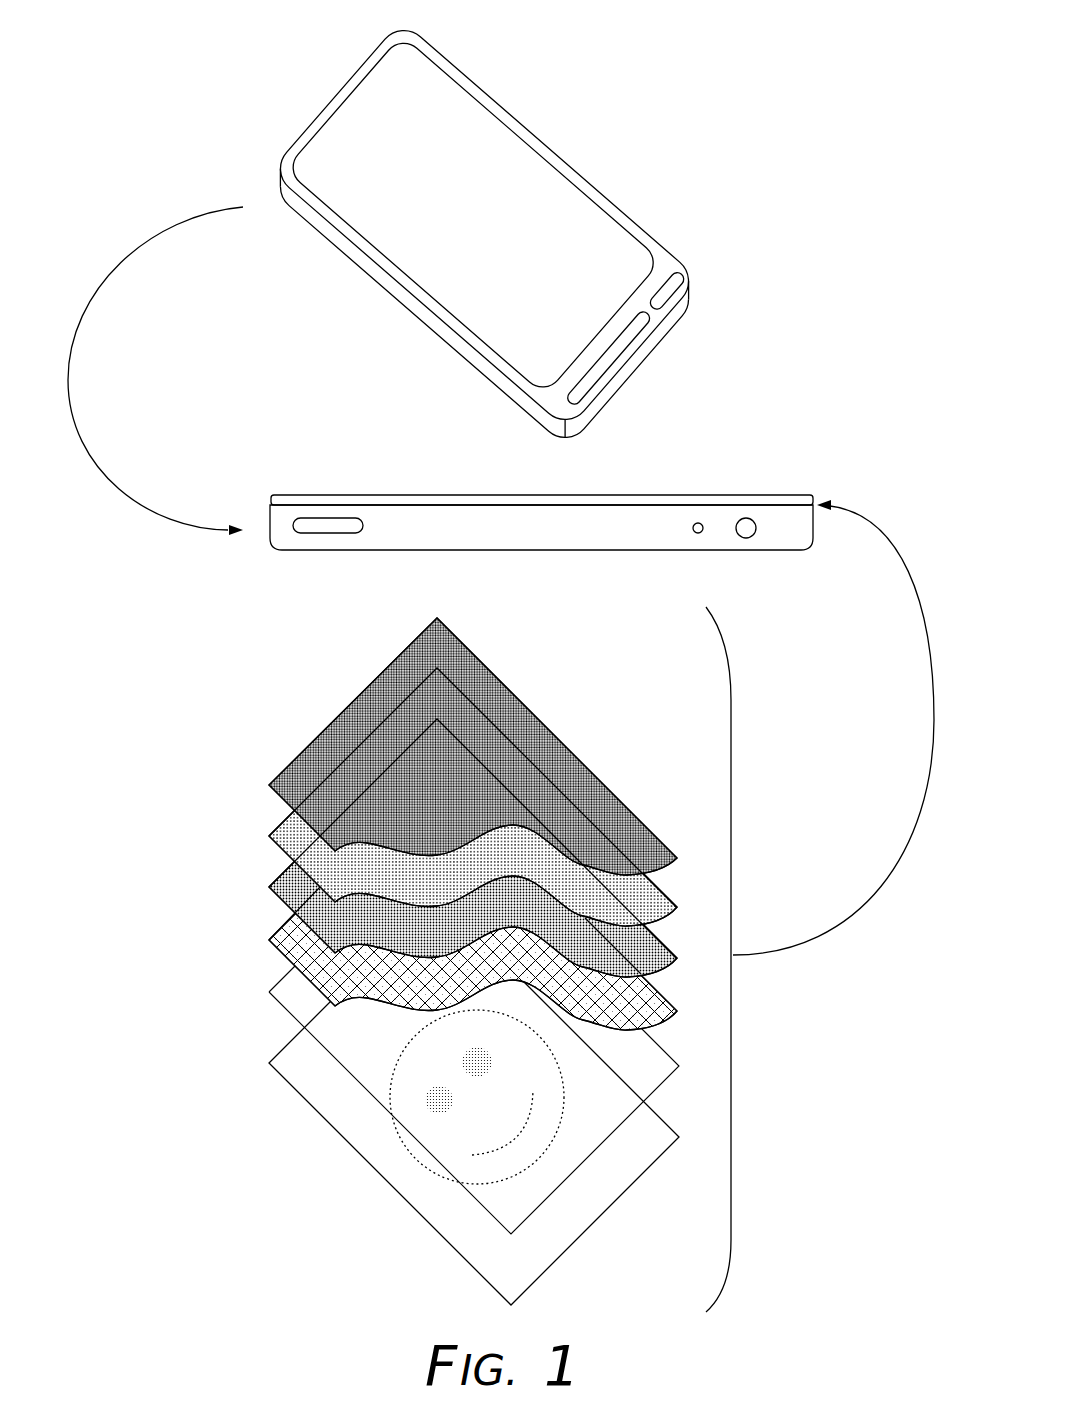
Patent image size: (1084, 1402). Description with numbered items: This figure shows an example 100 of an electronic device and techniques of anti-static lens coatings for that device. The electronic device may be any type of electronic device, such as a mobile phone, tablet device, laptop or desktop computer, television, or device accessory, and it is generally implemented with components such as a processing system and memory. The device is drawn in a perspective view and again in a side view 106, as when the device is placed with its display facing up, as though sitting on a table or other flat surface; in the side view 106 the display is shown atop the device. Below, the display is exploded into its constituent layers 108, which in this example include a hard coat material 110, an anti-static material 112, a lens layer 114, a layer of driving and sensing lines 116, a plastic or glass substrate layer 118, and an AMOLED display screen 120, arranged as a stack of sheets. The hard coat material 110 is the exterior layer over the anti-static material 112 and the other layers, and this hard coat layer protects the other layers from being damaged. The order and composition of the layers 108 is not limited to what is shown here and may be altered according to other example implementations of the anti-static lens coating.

The example 100 is at (541, 76).
The side view 106 is at (403, 481).
The layers 108 is at (735, 1000).
The hard coat material 110 is at (520, 714).
The anti-static material 112 is at (293, 833).
The lens layer 114 is at (297, 885).
The layer of driving and sensing lines 116 is at (295, 943).
The plastic or glass substrate layer 118 is at (295, 997).
The AMOLED display screen 120 is at (402, 1160).